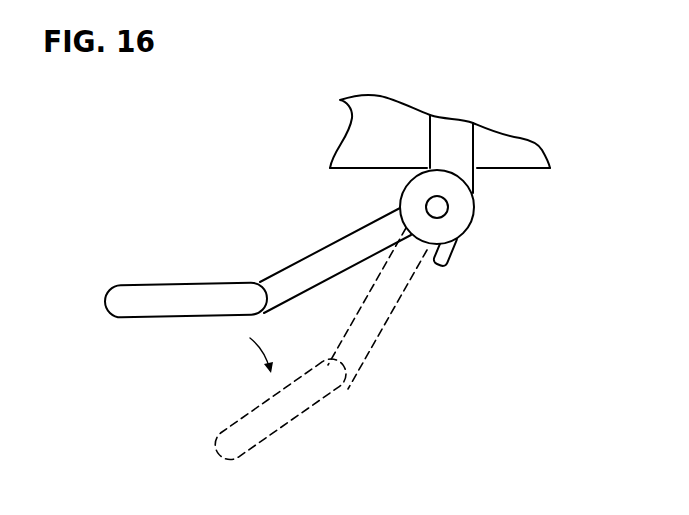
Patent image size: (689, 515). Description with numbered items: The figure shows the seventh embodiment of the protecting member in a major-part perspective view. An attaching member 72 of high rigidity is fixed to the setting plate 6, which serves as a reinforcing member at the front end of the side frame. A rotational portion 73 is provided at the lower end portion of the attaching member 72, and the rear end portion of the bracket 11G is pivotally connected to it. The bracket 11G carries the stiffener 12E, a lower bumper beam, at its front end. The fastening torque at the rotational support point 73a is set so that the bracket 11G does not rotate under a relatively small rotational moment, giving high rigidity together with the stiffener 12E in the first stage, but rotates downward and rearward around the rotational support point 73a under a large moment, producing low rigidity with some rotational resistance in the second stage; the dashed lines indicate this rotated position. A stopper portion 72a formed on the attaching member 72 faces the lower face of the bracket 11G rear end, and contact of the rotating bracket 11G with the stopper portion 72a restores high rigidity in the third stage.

The setting plate 6 is at (522, 147).
The attaching member 72 is at (453, 127).
The stopper portion 72a is at (450, 253).
The rotational portion 73 is at (458, 193).
The rotational support point 73a is at (443, 208).
The bracket 11G is at (320, 257).
The stiffener 12E is at (155, 293).